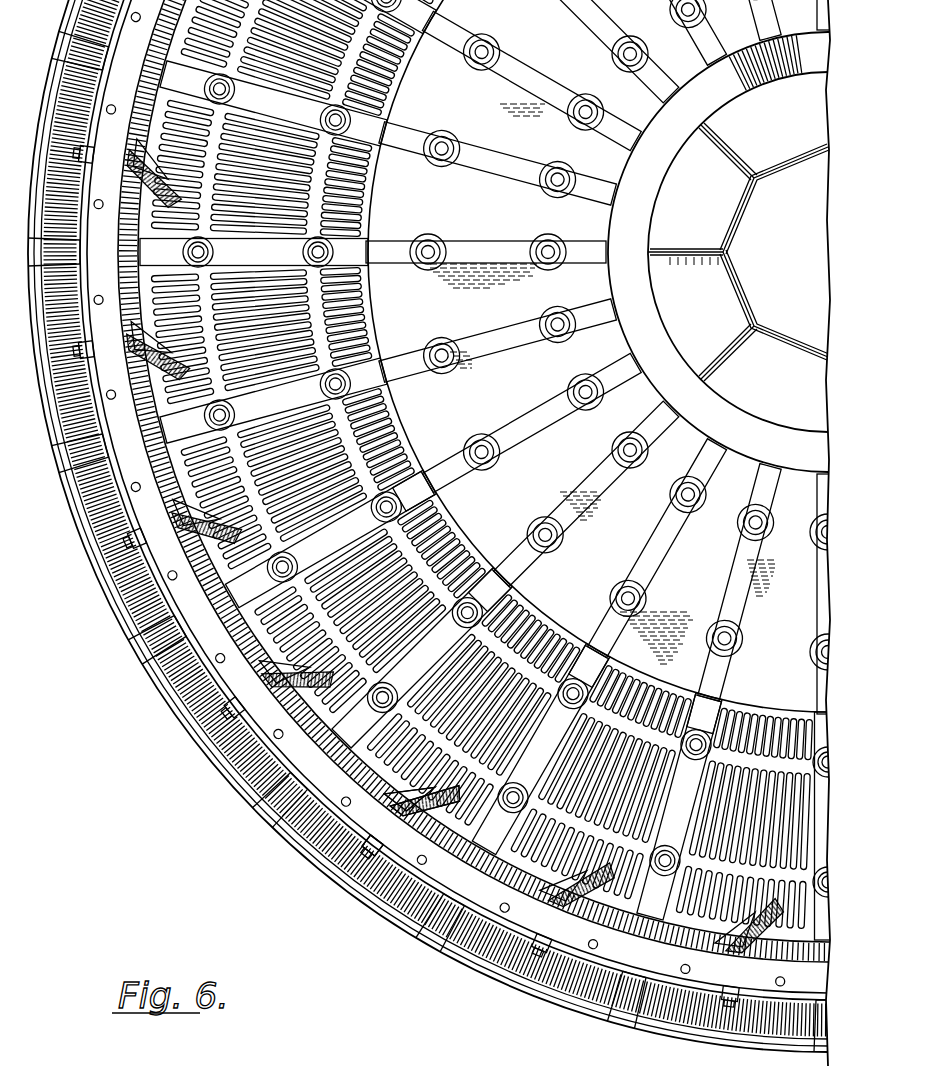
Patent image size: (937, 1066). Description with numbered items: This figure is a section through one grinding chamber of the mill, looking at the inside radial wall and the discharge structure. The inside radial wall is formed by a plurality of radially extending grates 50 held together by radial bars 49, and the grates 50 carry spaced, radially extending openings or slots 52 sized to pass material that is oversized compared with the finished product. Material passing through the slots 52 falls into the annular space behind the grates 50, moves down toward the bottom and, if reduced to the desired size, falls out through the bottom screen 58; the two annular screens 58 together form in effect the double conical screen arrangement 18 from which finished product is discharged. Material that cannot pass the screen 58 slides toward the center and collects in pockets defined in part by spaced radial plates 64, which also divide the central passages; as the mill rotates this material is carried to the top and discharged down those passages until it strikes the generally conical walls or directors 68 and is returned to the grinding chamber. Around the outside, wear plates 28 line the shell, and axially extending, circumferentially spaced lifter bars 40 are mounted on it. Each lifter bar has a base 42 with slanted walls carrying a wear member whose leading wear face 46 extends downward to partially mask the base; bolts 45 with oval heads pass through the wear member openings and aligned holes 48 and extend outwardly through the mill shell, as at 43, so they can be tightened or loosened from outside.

The screen arrangement 18 is at (482, 526).
The wear plates 28 is at (527, 481).
The lifter bars 40 is at (426, 571).
The base 42 is at (450, 801).
The bolt extension through mill shell 43 is at (489, 519).
The bolts 45 is at (394, 848).
The leading wear face 46 is at (377, 790).
The holes 48 is at (512, 496).
The radial bars 49 is at (583, 602).
The grates 50 is at (477, 601).
The openings or slots 52 is at (652, 356).
The bottom screen 58 is at (485, 530).
The radial plates 64 is at (435, 541).
The directors 68 is at (738, 252).